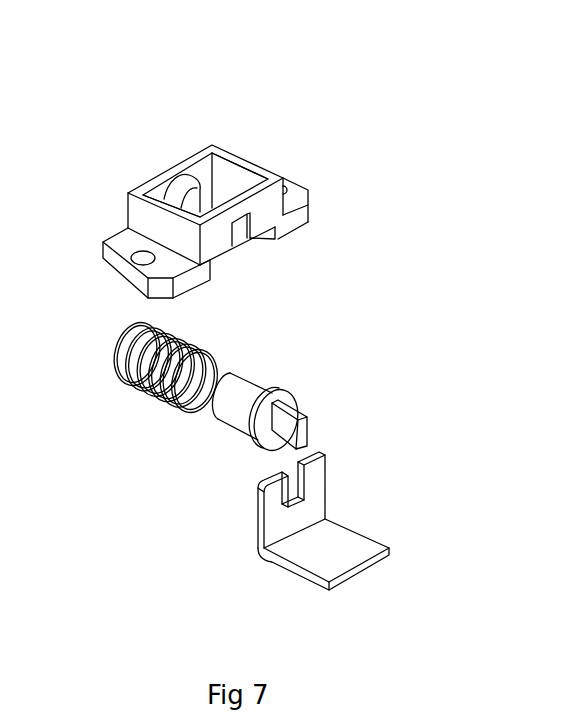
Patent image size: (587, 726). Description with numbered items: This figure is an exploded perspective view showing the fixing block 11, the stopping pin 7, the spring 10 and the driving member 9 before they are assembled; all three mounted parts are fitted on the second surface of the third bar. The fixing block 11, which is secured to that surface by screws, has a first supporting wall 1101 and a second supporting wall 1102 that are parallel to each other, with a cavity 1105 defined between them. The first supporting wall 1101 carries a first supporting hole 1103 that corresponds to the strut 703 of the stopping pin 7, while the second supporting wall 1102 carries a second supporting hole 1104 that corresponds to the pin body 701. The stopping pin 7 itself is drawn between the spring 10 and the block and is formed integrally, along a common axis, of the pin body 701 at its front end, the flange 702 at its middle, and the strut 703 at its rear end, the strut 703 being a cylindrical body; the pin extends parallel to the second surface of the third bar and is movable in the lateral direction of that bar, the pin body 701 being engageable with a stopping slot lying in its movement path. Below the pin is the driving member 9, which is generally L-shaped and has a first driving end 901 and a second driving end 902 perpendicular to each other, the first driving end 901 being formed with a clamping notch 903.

The fixing block 11 is at (318, 180).
The first supporting wall 1101 is at (193, 157).
The second supporting wall 1102 is at (256, 193).
The first supporting hole 1103 is at (178, 197).
The second supporting hole 1104 is at (237, 235).
The cavity 1105 is at (214, 205).
The spring 10 is at (118, 378).
The stopping pin 7 is at (262, 373).
The pin body 701 is at (312, 436).
The flange 702 is at (280, 391).
The strut 703 is at (228, 421).
The driving member 9 is at (270, 575).
The first driving end 901 is at (258, 500).
The second driving end 902 is at (386, 558).
The clamping notch 903 is at (295, 490).